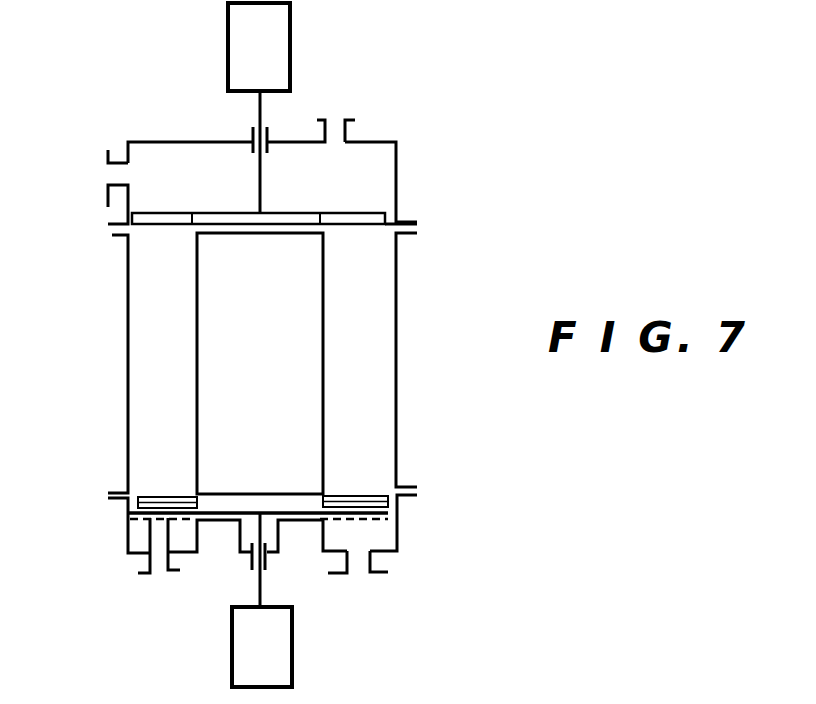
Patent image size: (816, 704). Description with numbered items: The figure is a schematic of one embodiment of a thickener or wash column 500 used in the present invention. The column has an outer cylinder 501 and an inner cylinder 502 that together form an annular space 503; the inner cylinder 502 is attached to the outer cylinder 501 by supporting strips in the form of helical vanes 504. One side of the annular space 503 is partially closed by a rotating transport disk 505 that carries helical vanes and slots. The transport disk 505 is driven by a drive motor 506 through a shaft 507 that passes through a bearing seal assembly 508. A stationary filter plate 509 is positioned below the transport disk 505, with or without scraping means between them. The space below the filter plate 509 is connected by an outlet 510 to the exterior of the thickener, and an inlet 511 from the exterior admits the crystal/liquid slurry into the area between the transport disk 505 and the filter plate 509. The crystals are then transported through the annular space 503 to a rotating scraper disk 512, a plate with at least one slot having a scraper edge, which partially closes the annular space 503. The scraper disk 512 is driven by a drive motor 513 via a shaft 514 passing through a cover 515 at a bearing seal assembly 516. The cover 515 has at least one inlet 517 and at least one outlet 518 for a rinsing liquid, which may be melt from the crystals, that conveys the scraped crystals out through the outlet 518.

The reactor apparatus 500 is at (479, 283).
The outer cylinder 501 is at (449, 376).
The inner cylinder 502 is at (287, 317).
The annular space 503 is at (143, 303).
The helical vanes 504 is at (165, 493).
The rotating transport disk 505 is at (130, 517).
The drive motor 506 is at (292, 672).
The shaft 507 is at (284, 570).
The bearing seal assembly 508 is at (252, 562).
The stationary filter plate 509 is at (373, 519).
The outlet 510 is at (357, 572).
The inlet 511 is at (158, 576).
The rotating scraper disk 512 is at (358, 215).
The drive motor 513 is at (291, 51).
The shaft 514 is at (258, 186).
The cover 515 is at (397, 158).
The bearing seal assembly 516 is at (252, 130).
The inlet 517 is at (108, 173).
The outlet 518 is at (337, 118).